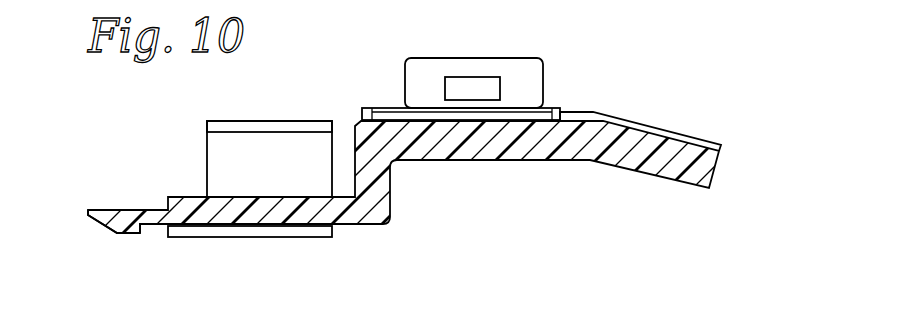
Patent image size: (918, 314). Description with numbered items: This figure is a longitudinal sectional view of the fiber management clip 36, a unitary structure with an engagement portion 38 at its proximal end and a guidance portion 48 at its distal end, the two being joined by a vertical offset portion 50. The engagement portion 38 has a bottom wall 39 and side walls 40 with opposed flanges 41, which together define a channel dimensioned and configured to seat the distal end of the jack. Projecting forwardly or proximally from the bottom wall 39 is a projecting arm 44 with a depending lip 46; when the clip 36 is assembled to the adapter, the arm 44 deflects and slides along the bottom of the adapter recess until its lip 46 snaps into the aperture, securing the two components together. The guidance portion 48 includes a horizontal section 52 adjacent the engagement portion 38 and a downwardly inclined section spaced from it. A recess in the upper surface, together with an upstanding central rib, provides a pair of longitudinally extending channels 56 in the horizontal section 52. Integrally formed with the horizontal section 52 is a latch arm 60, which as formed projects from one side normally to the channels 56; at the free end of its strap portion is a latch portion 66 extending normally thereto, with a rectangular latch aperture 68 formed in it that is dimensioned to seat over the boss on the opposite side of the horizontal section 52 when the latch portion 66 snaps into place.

The fiber management clip 36 is at (478, 171).
The engagement portion 38 is at (282, 226).
The bottom wall 39 is at (236, 214).
The side walls 40 is at (283, 173).
The opposed flanges 41 is at (270, 119).
The projecting arm 44 is at (150, 228).
The depending lip 46 is at (118, 235).
The guidance portion 48 is at (512, 142).
The vertical offset portion 50 is at (374, 183).
The horizontal section 52 is at (557, 112).
The longitudinally extending channels 56 is at (503, 117).
The latch arm 60 is at (425, 57).
The latch portion 66 is at (480, 70).
The latch aperture 68 is at (459, 77).